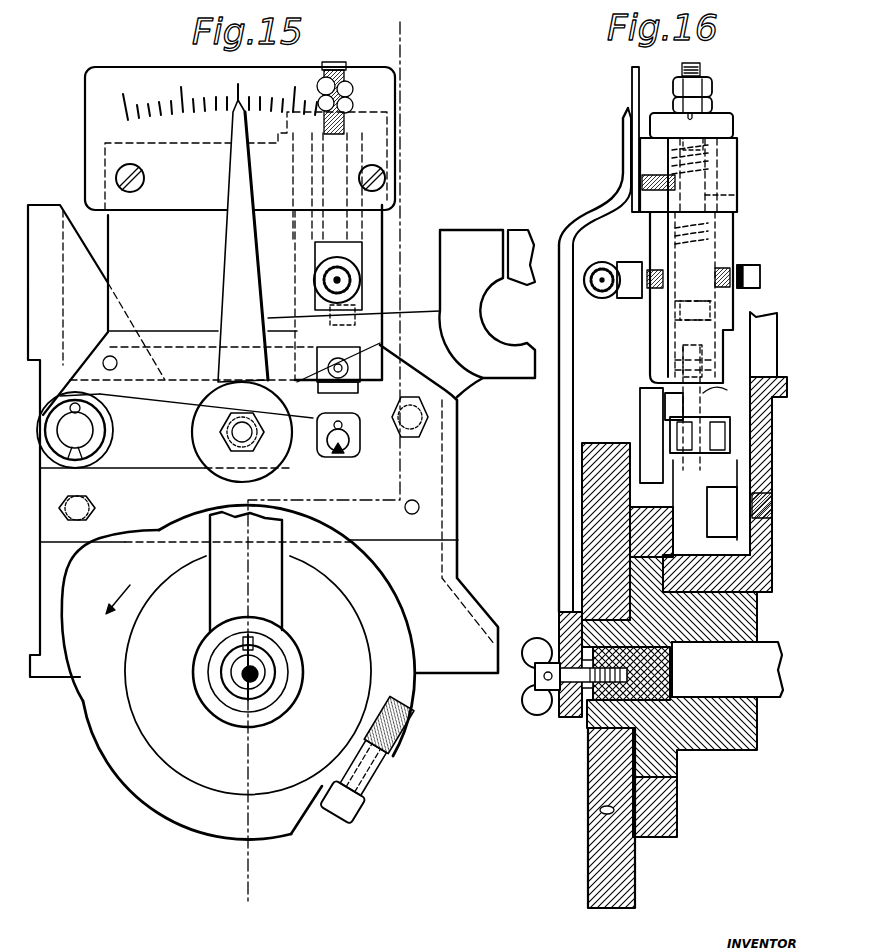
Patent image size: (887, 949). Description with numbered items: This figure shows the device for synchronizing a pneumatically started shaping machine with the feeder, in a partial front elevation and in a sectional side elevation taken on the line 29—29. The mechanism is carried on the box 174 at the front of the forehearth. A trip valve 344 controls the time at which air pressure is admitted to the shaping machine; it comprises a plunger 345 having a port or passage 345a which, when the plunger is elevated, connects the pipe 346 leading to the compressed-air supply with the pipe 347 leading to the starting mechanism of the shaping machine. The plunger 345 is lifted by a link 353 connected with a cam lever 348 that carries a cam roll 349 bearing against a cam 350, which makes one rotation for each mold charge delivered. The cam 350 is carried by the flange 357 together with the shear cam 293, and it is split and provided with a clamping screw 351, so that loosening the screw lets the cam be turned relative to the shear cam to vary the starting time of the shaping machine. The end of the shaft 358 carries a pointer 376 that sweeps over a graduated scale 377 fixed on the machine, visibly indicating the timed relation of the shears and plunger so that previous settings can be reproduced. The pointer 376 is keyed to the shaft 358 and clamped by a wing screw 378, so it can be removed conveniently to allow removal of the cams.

In FIG. 15, the section line 29— 29 is at (402, 33).
In FIG. 15, the mechanism box 174 is at (459, 563).
In FIG. 16, the mechanism box 174 is at (692, 572).
In FIG. 16, the shear cam 293 is at (588, 877).
In FIG. 15, the trip valve 344 is at (373, 250).
In FIG. 16, the trip valve 344 is at (735, 218).
In FIG. 15, the plunger 345 is at (358, 256).
In FIG. 16, the plunger 345 is at (672, 348).
In FIG. 15, the port or passage 345a is at (358, 313).
In FIG. 16, the port or passage 345a is at (670, 316).
In FIG. 16, the pipe 346 is at (750, 266).
In FIG. 15, the pipe 347 is at (350, 280).
In FIG. 16, the pipe 347 is at (602, 266).
In FIG. 15, the cam lever 348 is at (148, 458).
In FIG. 16, the cam lever 348 is at (712, 467).
In FIG. 15, the cam roll 349 is at (280, 466).
In FIG. 16, the cam roll 349 is at (640, 401).
In FIG. 15, the cam 350 is at (417, 570).
In FIG. 16, the cam 350 is at (676, 818).
In FIG. 15, the clamping screw 351 is at (347, 822).
In FIG. 15, the link 353 is at (357, 441).
In FIG. 16, the link 353 is at (688, 404).
In FIG. 15, the flange 357 is at (128, 646).
In FIG. 16, the flange 357 is at (662, 764).
In FIG. 15, the shaft 358 is at (268, 693).
In FIG. 16, the shaft 358 is at (727, 669).
In FIG. 15, the pointer 376 is at (232, 305).
In FIG. 16, the pointer 376 is at (625, 154).
In FIG. 15, the scale 377 is at (113, 68).
In FIG. 16, the scale 377 is at (632, 89).
In FIG. 15, the wing screw 378 is at (252, 647).
In FIG. 16, the wing screw 378 is at (541, 718).